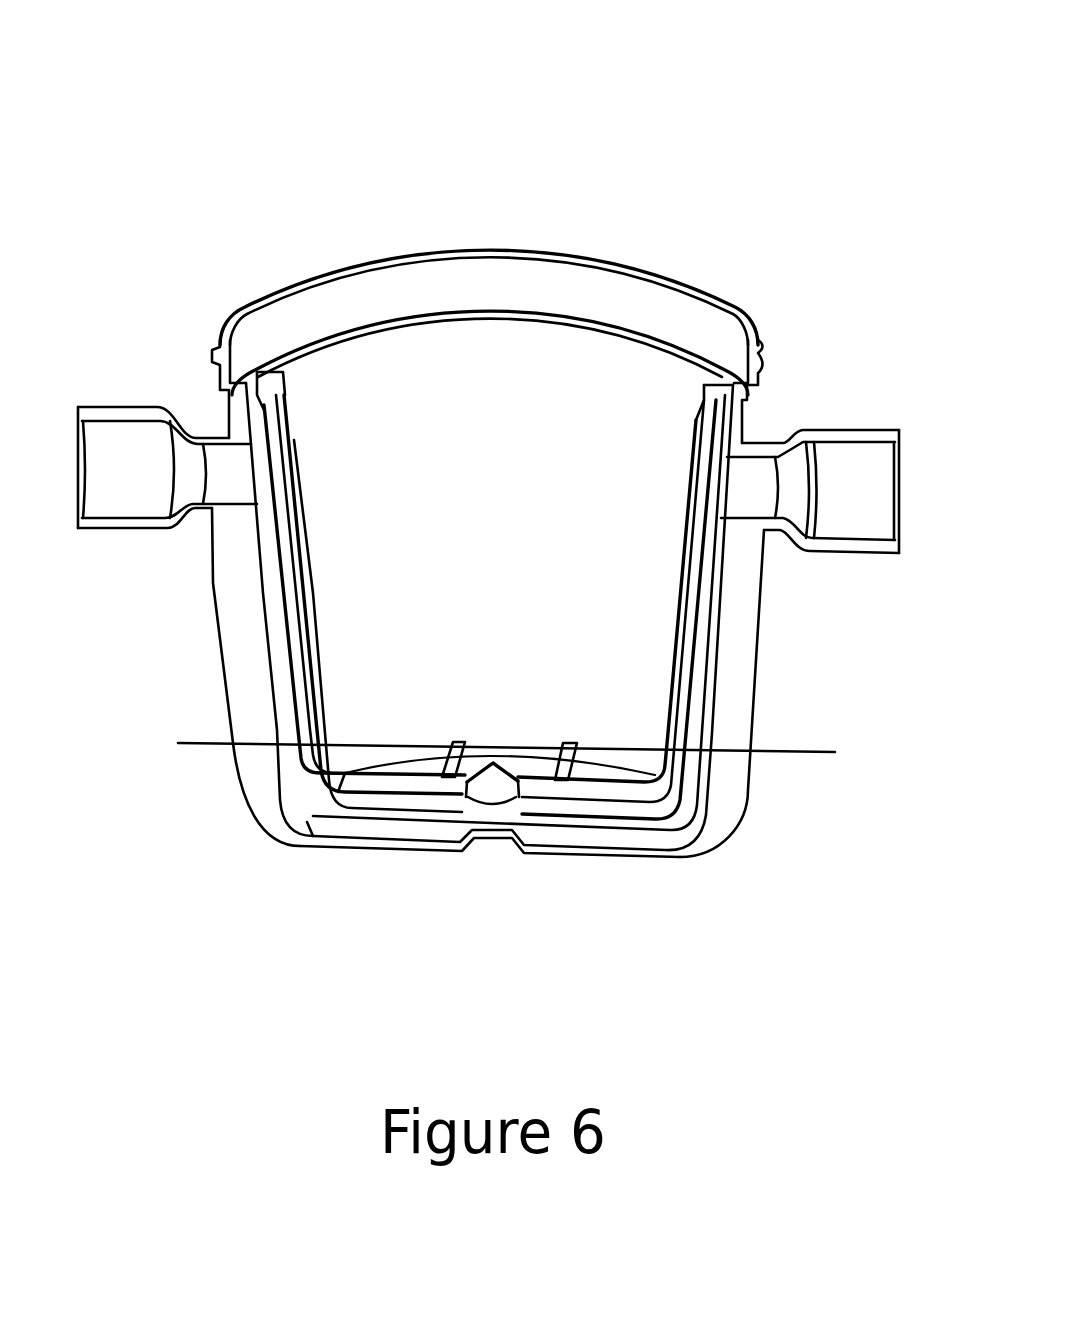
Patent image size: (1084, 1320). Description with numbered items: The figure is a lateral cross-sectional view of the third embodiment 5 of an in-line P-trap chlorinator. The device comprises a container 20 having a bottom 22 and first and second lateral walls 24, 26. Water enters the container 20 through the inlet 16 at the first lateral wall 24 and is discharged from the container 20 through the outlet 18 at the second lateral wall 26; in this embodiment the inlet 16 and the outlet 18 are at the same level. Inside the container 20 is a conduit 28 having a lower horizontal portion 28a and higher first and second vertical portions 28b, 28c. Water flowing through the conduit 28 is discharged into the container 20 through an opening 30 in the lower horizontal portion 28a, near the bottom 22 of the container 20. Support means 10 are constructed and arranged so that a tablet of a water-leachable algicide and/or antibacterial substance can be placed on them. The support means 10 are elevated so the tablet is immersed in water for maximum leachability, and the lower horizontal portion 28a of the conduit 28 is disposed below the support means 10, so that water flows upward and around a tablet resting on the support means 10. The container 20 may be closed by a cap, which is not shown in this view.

The in-line P-trap chlorinator (third embodiment) 5 is at (553, 223).
The support means 10 is at (509, 751).
The inlet 16 is at (837, 425).
The outlet 18 is at (148, 407).
The container 20 is at (495, 675).
The bottom 22 is at (357, 850).
The first lateral wall 24 is at (762, 580).
The second lateral wall 26 is at (213, 580).
The conduit 28 is at (505, 674).
The lower horizontal portion 28a is at (560, 812).
The first vertical portion 28b is at (717, 640).
The second vertical portion 28c is at (263, 643).
The opening 30 is at (490, 785).